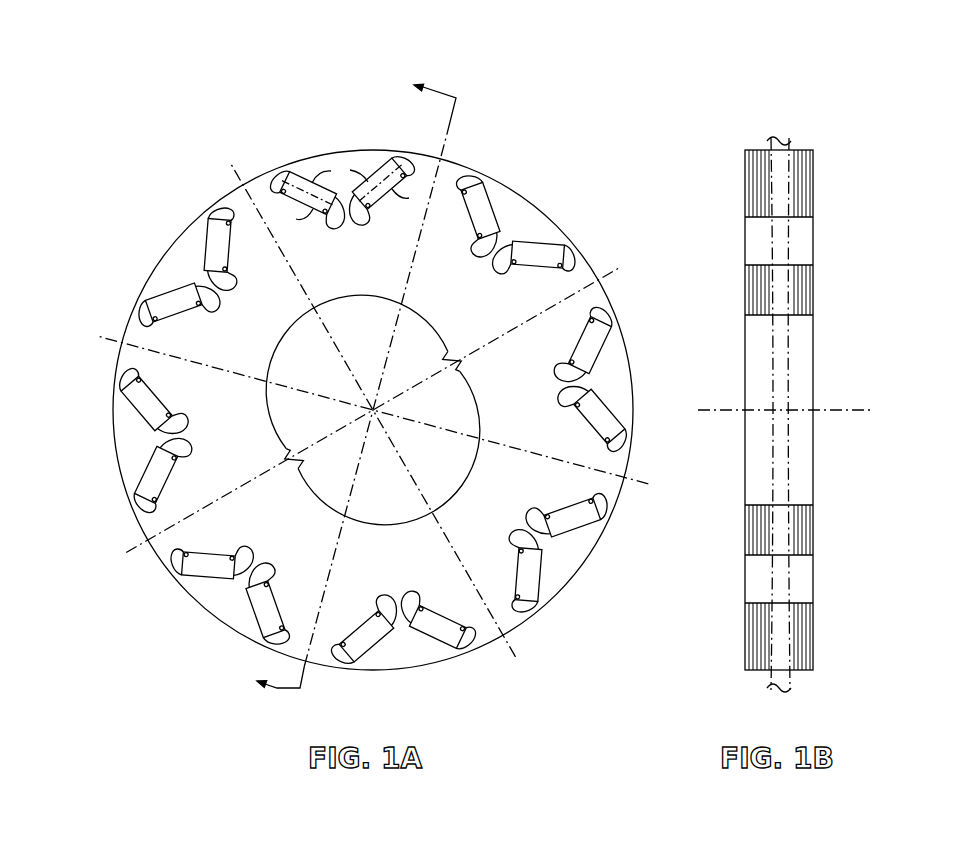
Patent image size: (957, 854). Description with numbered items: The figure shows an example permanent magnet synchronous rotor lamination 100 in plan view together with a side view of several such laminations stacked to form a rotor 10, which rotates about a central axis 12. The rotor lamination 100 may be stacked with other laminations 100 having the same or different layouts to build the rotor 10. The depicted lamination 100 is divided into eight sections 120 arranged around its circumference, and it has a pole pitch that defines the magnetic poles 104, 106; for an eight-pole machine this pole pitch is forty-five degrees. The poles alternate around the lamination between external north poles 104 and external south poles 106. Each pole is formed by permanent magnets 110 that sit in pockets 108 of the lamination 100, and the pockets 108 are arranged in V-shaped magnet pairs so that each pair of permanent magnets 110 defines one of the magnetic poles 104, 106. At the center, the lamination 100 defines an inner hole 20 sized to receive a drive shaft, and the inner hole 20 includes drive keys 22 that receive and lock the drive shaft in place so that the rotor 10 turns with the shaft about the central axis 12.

In FIG. 1A, the rotor lamination 100 is at (207, 100).
In FIG. 1B, the rotor lamination 100 is at (753, 148).
In FIG. 1A, the section 120 is at (392, 77).
In FIG. 1A, the external north pole 104 is at (341, 152).
In FIG. 1A, the external south pole 106 is at (166, 255).
In FIG. 1A, the pocket 108 is at (288, 178).
In FIG. 1A, the permanent magnet 110 is at (299, 182).
In FIG. 1A, the inner hole 20 is at (436, 479).
In FIG. 1A, the drive key 22 is at (453, 377).
In FIG. 1B, the rotor 10 is at (870, 183).
In FIG. 1B, the central axis 12 is at (852, 408).